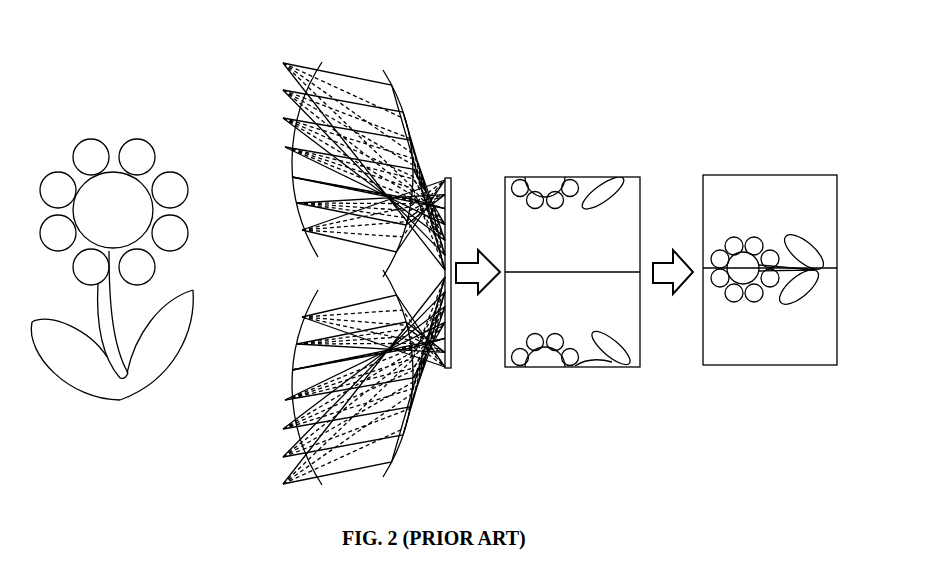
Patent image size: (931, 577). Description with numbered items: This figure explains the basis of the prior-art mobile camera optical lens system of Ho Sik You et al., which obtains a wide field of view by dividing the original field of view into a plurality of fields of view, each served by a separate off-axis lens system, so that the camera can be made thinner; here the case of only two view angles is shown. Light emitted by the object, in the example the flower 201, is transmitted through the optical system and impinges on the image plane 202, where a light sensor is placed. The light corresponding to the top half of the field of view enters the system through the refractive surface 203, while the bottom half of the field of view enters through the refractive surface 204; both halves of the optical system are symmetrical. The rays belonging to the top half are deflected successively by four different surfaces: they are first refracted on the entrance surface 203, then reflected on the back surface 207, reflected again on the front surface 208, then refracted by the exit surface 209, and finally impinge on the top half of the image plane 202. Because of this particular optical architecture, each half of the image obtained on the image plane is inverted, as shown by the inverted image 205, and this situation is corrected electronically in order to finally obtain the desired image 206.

The flower 201 is at (100, 130).
The image plane 202 is at (452, 220).
The refractive surface 203 is at (312, 90).
The refractive surface 204 is at (308, 458).
The inverted image 205 is at (572, 175).
The desired image 206 is at (768, 368).
The back surface 207 is at (385, 88).
The front surface 208 is at (305, 193).
The exit surface 209 is at (392, 217).